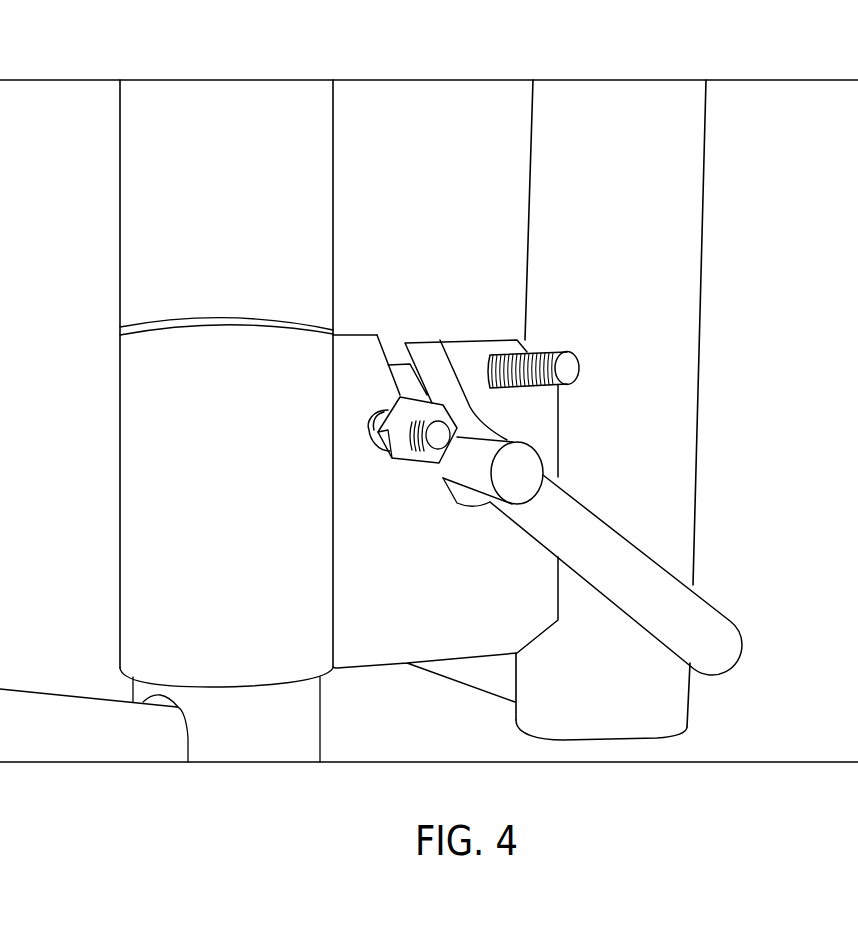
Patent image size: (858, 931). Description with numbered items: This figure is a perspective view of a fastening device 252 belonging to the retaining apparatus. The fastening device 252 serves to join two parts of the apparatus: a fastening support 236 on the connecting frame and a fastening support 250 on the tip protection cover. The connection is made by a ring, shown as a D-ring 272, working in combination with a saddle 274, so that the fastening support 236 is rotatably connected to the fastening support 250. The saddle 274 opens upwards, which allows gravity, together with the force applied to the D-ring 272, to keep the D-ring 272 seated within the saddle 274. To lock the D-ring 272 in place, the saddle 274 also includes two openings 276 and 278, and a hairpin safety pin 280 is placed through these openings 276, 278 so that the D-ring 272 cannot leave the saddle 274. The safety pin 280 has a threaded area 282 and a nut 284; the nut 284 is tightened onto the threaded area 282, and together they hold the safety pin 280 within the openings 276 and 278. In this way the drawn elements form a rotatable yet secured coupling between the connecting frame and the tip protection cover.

The fastening support 236 is at (333, 171).
The fastening support 250 is at (702, 268).
The fastening device 252 is at (472, 109).
The D-ring 272 is at (622, 553).
The saddle 274 is at (457, 338).
The opening 276 is at (490, 343).
The opening 278 is at (380, 452).
The hairpin safety pin 280 is at (552, 352).
The threaded area 282 is at (438, 478).
The nut 284 is at (403, 463).